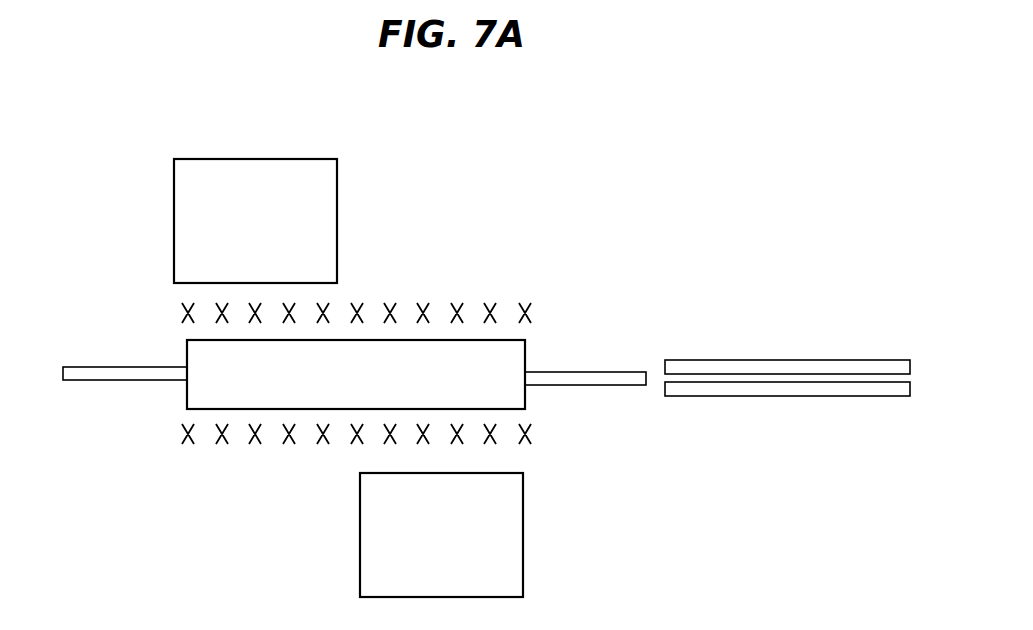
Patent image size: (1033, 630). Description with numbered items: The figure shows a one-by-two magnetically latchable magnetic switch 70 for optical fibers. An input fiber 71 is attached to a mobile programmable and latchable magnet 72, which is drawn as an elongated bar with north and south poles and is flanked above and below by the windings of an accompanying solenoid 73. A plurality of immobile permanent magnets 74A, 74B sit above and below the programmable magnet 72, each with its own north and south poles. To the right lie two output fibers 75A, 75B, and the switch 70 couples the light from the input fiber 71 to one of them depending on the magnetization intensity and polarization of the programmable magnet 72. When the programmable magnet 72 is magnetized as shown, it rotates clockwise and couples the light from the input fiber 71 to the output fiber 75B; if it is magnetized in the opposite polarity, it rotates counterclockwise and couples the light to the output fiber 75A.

The magnetic switch 70 is at (560, 173).
The input fiber 71 is at (85, 366).
The programmable magnet 72 is at (527, 358).
The solenoid 73 is at (492, 297).
The immobile permanent magnet 74A is at (228, 159).
The immobile permanent magnet 74B is at (523, 539).
The output fiber 75A is at (808, 359).
The output fiber 75B is at (813, 397).